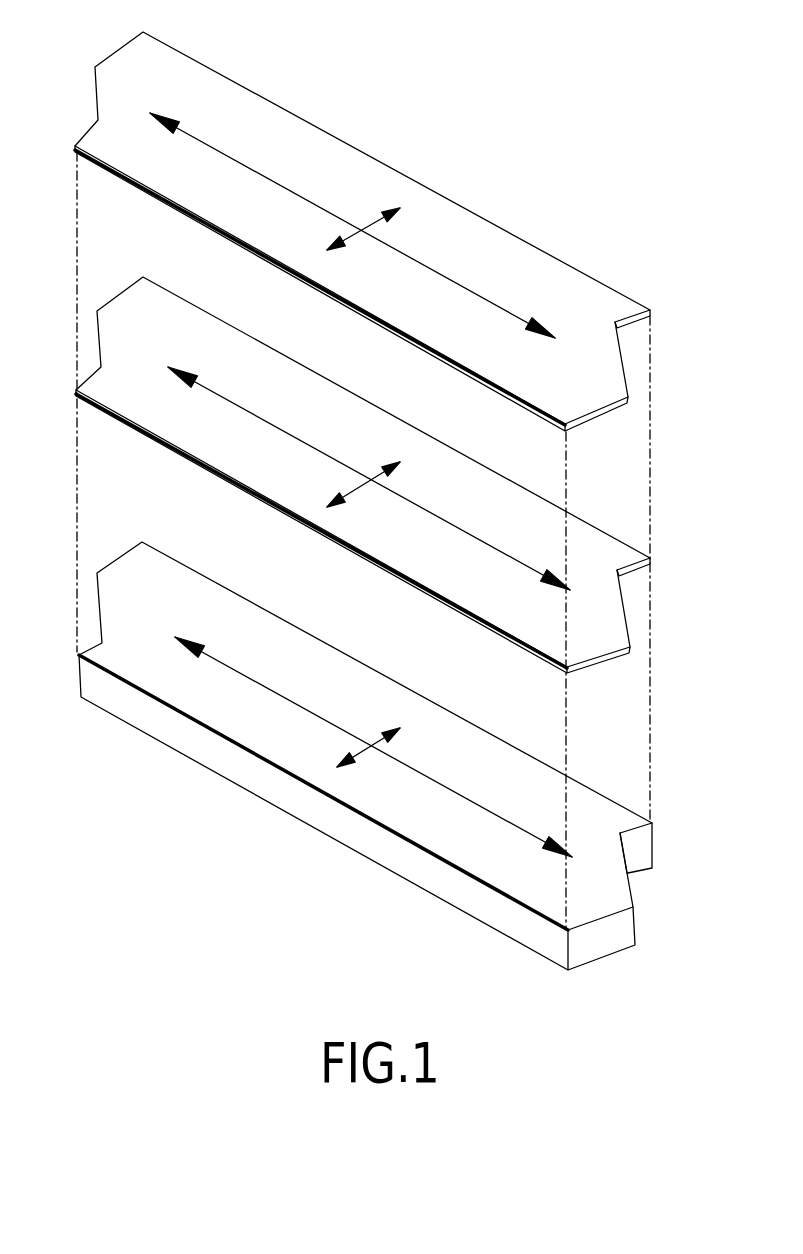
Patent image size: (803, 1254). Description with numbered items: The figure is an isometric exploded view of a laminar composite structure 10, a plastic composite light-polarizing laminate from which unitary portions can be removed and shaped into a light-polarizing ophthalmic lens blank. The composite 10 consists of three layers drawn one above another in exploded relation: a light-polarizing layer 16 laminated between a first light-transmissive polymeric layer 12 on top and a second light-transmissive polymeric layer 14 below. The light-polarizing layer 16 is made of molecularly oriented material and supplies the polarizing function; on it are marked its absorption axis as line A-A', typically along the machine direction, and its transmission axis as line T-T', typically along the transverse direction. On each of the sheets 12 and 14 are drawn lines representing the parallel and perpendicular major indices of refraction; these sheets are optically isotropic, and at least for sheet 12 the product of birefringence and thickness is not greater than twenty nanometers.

The laminar composite structure 10 is at (673, 310).
The first light-transmissive polymeric layer 12 is at (198, 197).
The second light-transmissive polymeric layer 14 is at (235, 712).
The light-polarizing layer 16 is at (229, 451).